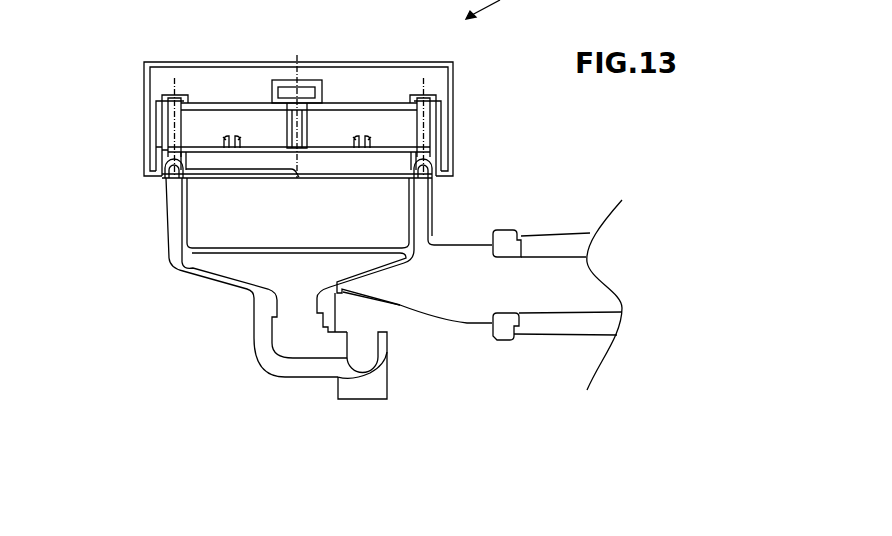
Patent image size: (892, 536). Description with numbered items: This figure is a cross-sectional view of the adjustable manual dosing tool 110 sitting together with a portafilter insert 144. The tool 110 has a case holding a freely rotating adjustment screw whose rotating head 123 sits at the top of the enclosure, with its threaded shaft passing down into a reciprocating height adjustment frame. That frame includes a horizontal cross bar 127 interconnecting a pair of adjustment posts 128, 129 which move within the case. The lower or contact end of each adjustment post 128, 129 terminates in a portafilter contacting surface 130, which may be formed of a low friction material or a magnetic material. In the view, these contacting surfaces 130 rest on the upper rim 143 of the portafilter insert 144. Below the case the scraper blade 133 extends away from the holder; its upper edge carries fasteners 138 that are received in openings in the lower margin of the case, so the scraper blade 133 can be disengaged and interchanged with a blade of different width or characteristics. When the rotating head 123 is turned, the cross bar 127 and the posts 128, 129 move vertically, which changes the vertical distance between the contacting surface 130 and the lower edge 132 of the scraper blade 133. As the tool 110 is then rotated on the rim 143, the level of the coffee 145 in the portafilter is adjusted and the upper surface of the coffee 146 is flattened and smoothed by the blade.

The adjustable manual dosing tool 110 is at (395, 57).
The rotating head 123 is at (295, 95).
The horizontal cross bar 127 is at (48, 0).
The adjustment post 128 is at (178, 116).
The adjustment post 129 is at (428, 123).
The portafilter contacting surface 130 is at (175, 140).
The lower edge of the scraper blade 132 is at (367, 180).
The scraper blade 133 is at (395, 162).
The fastener 138 is at (210, 9).
The upper rim 143 is at (175, 178).
The portafilter insert 144 is at (223, 250).
The coffee 145 is at (303, 220).
The upper surface of the coffee 146 is at (215, 180).